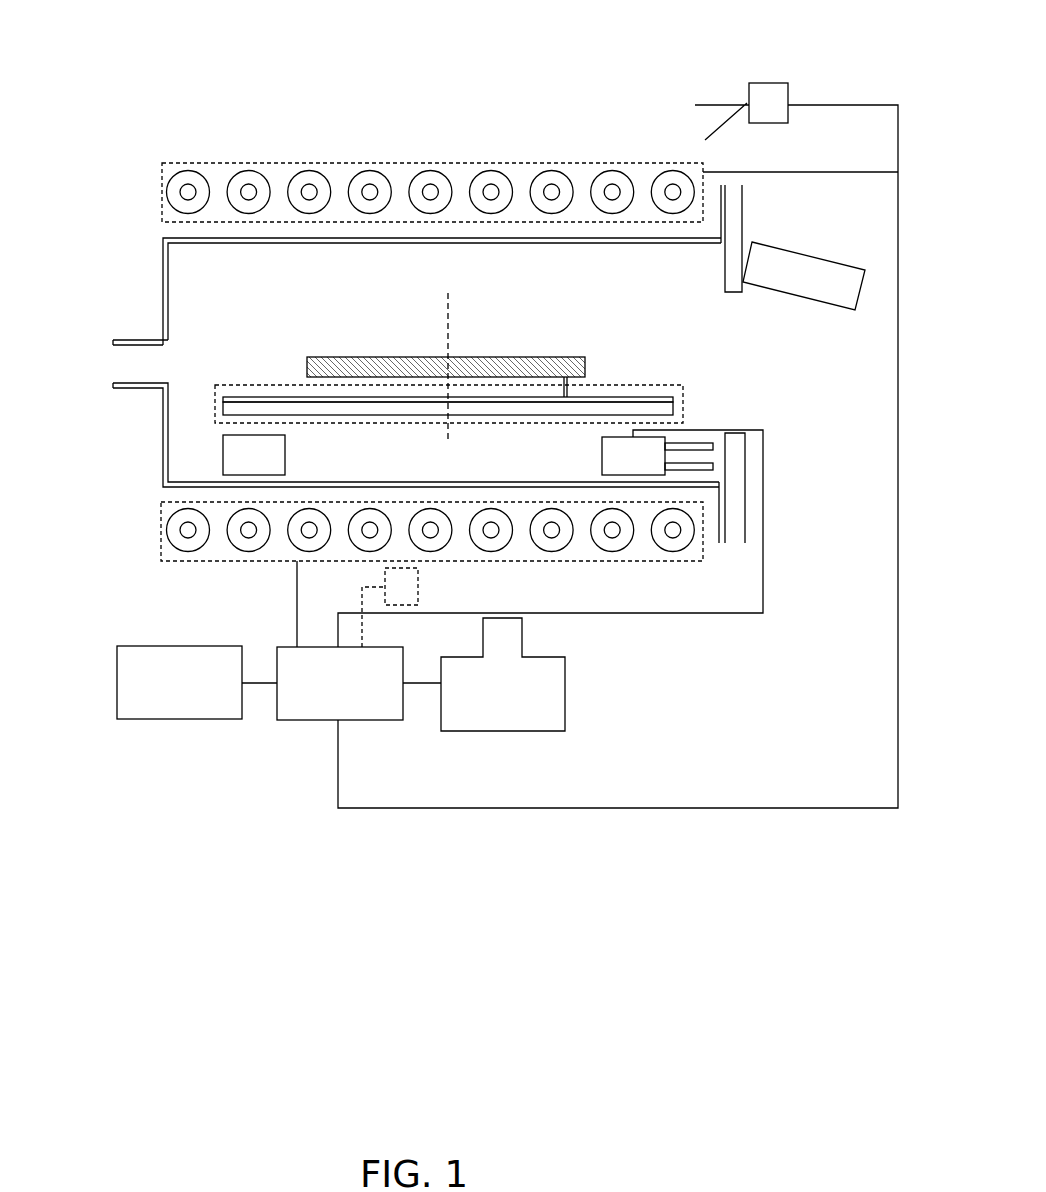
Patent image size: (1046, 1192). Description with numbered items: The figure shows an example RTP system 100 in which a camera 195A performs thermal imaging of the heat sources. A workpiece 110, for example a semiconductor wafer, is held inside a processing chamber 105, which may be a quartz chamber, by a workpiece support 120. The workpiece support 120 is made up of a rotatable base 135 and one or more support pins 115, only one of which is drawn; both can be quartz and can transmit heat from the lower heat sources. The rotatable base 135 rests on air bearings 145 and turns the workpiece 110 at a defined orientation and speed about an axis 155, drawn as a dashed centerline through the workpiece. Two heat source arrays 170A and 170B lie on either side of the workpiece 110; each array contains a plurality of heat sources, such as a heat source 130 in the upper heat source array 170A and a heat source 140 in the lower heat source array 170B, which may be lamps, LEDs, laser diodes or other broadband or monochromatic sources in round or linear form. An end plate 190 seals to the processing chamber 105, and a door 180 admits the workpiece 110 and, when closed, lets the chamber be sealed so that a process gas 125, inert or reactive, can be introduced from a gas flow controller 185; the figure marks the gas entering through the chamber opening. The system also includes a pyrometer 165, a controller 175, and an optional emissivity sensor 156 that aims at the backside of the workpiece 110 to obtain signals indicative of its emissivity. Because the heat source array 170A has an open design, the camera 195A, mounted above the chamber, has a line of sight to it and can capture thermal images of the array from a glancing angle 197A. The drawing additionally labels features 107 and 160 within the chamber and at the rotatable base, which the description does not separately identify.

The RTP system 100 is at (549, 84).
The processing chamber 105 is at (186, 284).
The lower processing region 107 is at (159, 487).
The workpiece 110 is at (535, 357).
The support pins 115 is at (570, 378).
The workpiece support 120 is at (685, 393).
The process gas 125 is at (117, 681).
The heat source 130 is at (172, 194).
The rotatable base 135 is at (362, 415).
The heat source 140 is at (432, 564).
The air bearings 145 is at (223, 462).
The axis 155 is at (450, 320).
The emissivity sensors 156 is at (418, 575).
The coating layer 160 is at (290, 397).
The pyrometer 165 is at (533, 731).
The heat source array 170A is at (394, 161).
The heat source array 170B is at (220, 563).
The controller 175 is at (362, 720).
The door 180 is at (822, 305).
The gas flow controller 185 is at (210, 719).
The end plate 190 is at (743, 225).
The camera 195A is at (788, 115).
The glancing angle 197A is at (730, 107).